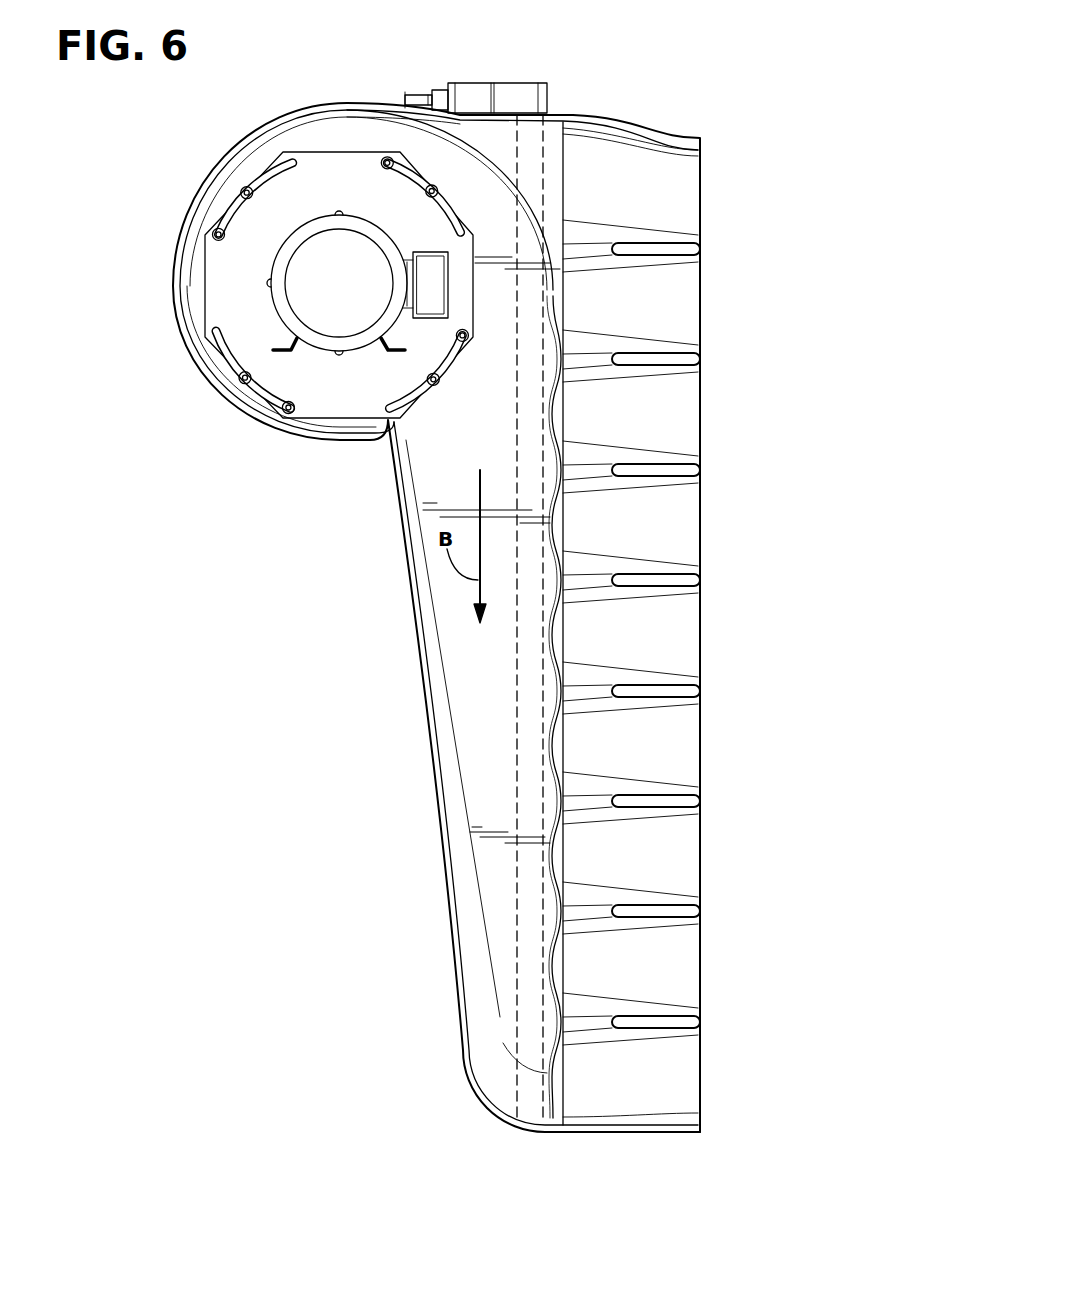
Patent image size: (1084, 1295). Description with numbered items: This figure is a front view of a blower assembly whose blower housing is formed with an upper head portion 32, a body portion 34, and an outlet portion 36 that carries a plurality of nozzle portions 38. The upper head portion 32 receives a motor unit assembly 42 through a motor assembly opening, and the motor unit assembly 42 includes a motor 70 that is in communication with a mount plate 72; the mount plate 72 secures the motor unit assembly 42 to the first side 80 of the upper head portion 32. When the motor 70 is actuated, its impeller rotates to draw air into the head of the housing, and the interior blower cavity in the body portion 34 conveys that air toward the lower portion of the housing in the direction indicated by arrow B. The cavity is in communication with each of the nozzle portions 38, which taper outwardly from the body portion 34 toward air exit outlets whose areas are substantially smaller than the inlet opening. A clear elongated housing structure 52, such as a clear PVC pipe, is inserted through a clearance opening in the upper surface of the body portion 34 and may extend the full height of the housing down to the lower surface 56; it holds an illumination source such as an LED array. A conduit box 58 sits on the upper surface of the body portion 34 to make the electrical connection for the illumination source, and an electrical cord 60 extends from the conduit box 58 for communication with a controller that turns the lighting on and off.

The upper head portion 32 is at (308, 150).
The body portion 34 is at (424, 682).
The outlet portion 36 is at (695, 622).
The nozzle portions 38 is at (670, 203).
The motor unit assembly 42 is at (358, 174).
The elongated housing structure 52 is at (546, 157).
The lower surface 56 is at (600, 1134).
The conduit box 58 is at (512, 85).
The electrical cord 60 is at (422, 88).
The motor 70 is at (329, 325).
The mount plate 72 is at (230, 316).
The first side 80 is at (342, 135).